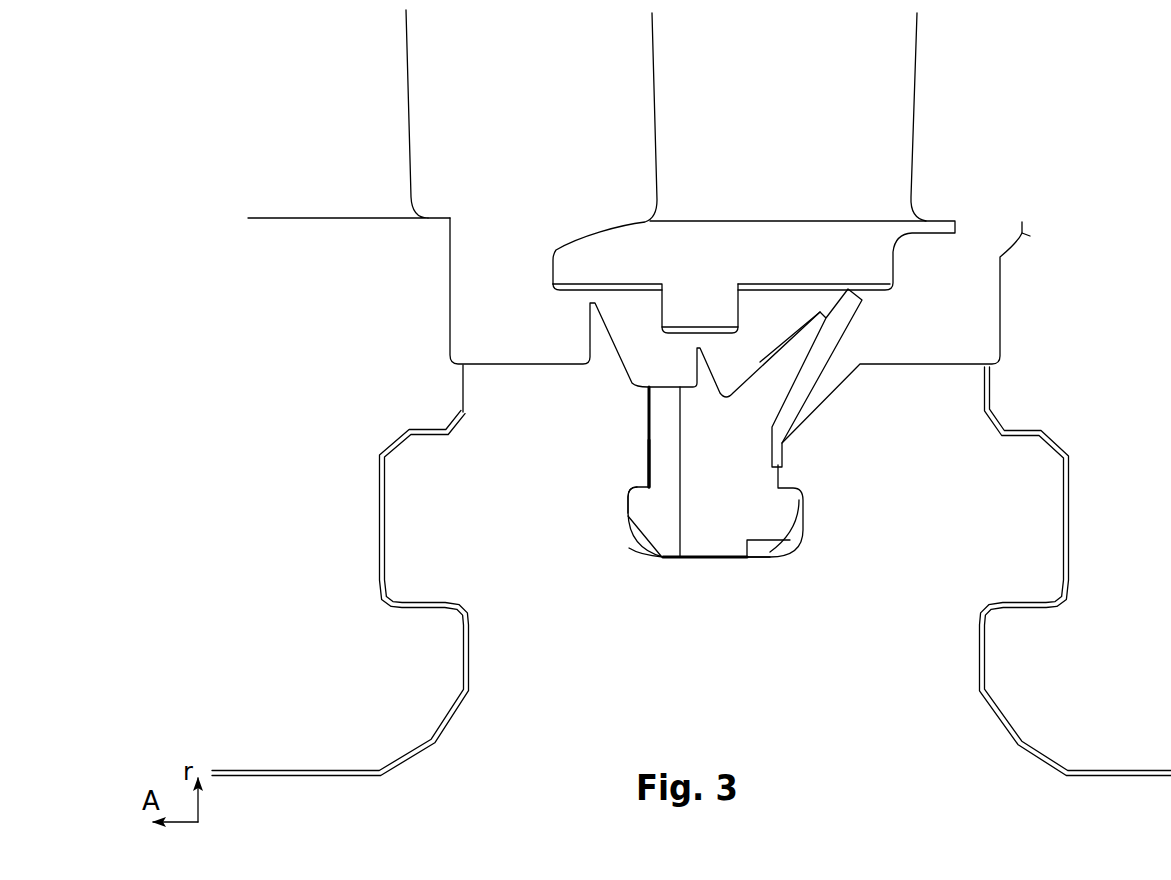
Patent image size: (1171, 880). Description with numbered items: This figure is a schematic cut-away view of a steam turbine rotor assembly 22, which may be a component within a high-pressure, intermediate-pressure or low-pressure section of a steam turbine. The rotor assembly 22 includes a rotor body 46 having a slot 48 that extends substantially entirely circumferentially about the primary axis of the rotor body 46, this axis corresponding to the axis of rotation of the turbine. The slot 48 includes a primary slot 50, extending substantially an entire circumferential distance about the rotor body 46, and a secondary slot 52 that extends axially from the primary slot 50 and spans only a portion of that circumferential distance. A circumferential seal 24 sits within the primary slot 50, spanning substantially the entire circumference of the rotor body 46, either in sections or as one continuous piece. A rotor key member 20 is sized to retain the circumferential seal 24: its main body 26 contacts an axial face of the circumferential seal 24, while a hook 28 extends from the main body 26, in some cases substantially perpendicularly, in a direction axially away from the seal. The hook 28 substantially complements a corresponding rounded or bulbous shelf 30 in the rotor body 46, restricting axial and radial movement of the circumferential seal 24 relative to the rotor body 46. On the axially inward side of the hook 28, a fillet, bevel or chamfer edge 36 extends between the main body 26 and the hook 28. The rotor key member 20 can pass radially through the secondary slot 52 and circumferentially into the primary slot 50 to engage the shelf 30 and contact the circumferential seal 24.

The rotor key member 20 is at (687, 522).
The steam turbine rotor assembly 22 is at (240, 133).
The circumferential seal 24 is at (771, 423).
The main body 26 is at (660, 421).
The hook 28 is at (637, 507).
The shelf 30 is at (622, 472).
The fillet, bevel or chamfer edge 36 is at (630, 530).
The rotor body 46 is at (1018, 571).
The slot 48 is at (675, 636).
The primary slot 50 is at (767, 578).
The secondary slot 52 is at (644, 580).